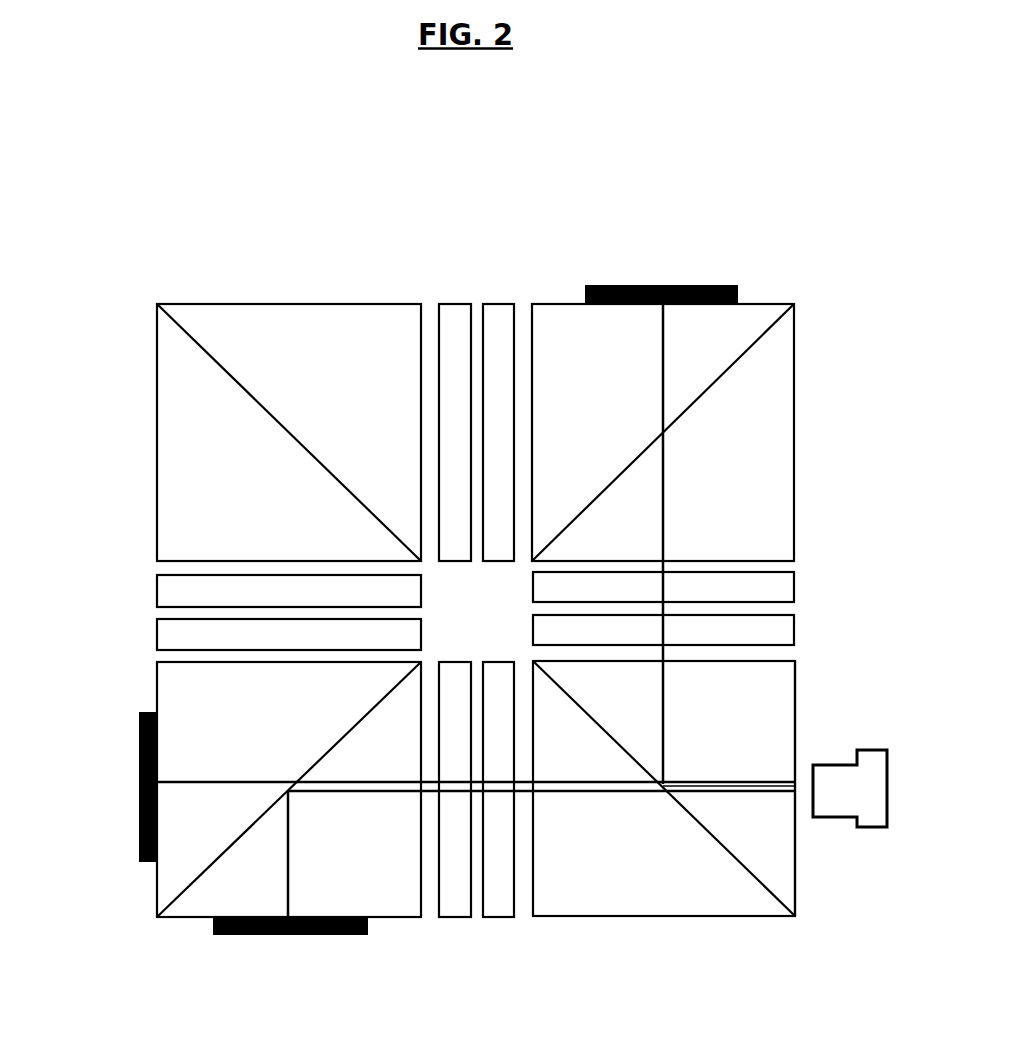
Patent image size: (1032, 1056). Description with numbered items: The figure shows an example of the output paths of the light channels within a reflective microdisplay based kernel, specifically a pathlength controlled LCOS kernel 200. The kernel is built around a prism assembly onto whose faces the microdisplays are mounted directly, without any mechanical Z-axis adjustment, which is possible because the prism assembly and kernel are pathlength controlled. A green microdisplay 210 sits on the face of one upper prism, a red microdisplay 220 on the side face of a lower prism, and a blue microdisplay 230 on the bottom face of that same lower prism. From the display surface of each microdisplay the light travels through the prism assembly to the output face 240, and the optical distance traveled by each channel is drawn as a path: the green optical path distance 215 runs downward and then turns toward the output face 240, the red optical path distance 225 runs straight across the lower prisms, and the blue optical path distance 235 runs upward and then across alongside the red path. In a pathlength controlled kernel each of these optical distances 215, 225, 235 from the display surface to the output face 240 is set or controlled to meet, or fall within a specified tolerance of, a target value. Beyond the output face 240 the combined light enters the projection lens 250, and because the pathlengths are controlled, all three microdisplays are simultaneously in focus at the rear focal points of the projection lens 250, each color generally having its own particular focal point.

The pathlength controlled LCOS kernel 200 is at (260, 268).
The green microdisplay 210 is at (703, 278).
The optical path distance 215 is at (665, 497).
The red microdisplay 220 is at (96, 787).
The optical path distance 225 is at (267, 781).
The blue microdisplay 230 is at (305, 956).
The optical path distance 235 is at (292, 847).
The output face 240 is at (810, 728).
The projection lens 250 is at (868, 842).